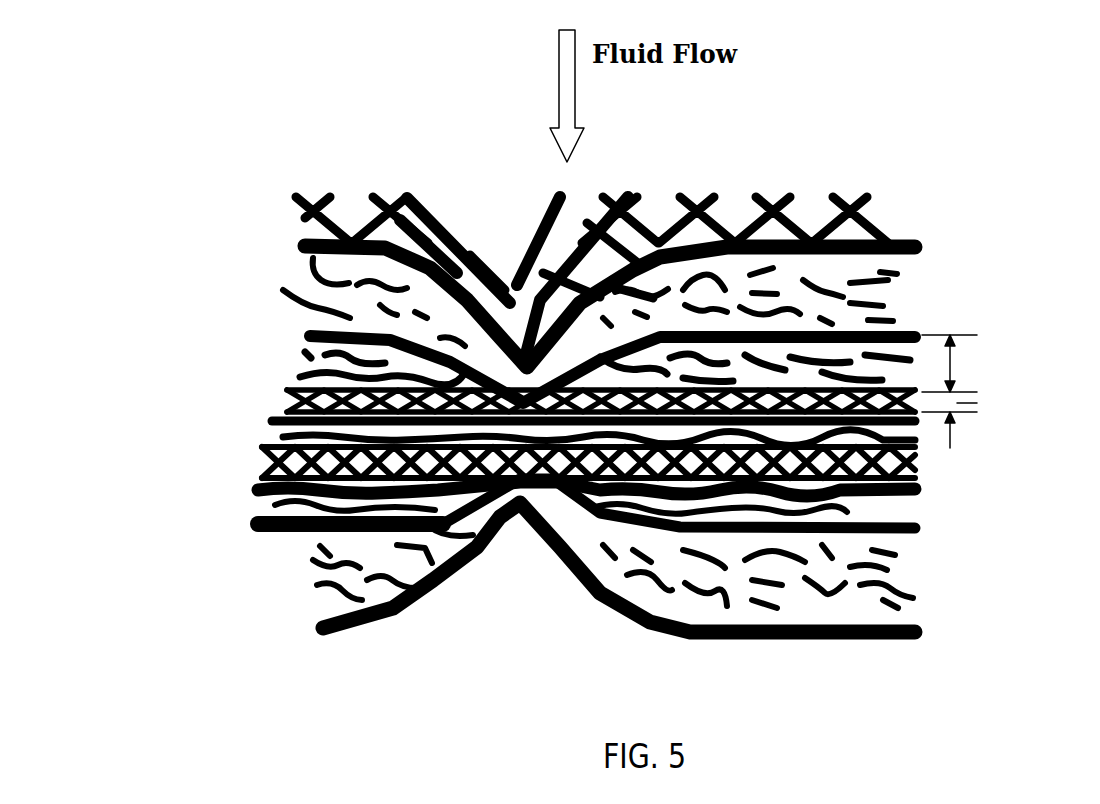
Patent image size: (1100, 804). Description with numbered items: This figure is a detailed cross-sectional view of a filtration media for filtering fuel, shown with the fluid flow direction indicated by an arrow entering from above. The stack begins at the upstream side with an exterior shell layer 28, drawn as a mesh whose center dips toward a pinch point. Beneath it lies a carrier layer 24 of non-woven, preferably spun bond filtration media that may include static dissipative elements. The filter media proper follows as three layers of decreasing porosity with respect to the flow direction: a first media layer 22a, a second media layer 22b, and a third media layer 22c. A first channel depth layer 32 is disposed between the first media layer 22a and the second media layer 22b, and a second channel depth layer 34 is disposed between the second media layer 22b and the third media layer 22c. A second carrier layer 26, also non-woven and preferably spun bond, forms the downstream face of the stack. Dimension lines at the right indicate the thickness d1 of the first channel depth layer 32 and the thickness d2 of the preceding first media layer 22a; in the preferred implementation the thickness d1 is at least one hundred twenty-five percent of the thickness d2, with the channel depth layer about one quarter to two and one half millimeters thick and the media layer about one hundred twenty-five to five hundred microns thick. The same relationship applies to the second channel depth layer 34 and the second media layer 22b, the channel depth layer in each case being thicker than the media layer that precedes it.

The exterior shell layer 28 is at (378, 205).
The carrier layer 24 is at (320, 303).
The first media layer 22a is at (308, 370).
The first channel depth layer 32 is at (283, 403).
The second media layer 22b is at (270, 438).
The second channel depth layer 34 is at (260, 462).
The third media layer 22c is at (255, 505).
The carrier layer 26 is at (307, 590).
The thickness of the first channel depth layer d1 is at (957, 403).
The thickness of the preceding media layer d2 is at (960, 363).